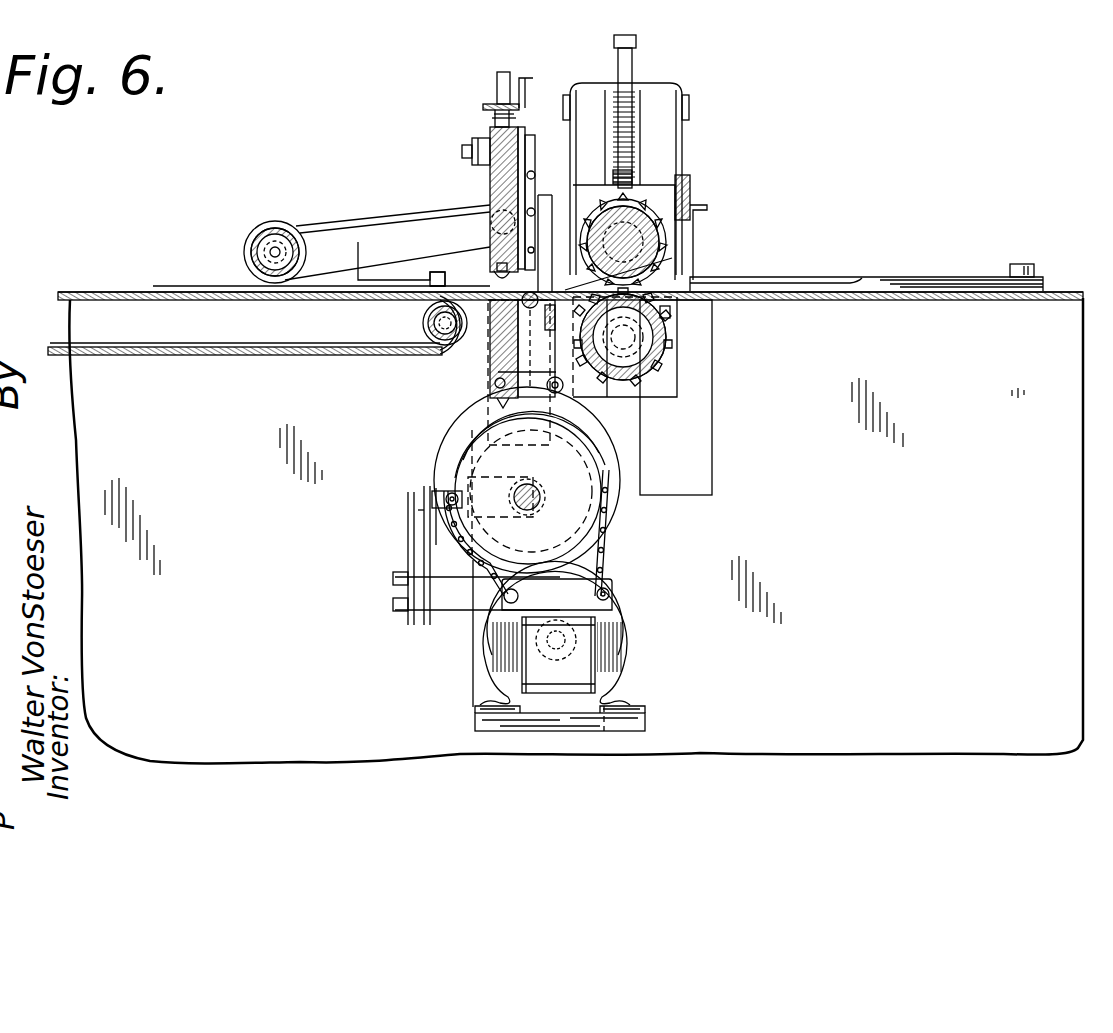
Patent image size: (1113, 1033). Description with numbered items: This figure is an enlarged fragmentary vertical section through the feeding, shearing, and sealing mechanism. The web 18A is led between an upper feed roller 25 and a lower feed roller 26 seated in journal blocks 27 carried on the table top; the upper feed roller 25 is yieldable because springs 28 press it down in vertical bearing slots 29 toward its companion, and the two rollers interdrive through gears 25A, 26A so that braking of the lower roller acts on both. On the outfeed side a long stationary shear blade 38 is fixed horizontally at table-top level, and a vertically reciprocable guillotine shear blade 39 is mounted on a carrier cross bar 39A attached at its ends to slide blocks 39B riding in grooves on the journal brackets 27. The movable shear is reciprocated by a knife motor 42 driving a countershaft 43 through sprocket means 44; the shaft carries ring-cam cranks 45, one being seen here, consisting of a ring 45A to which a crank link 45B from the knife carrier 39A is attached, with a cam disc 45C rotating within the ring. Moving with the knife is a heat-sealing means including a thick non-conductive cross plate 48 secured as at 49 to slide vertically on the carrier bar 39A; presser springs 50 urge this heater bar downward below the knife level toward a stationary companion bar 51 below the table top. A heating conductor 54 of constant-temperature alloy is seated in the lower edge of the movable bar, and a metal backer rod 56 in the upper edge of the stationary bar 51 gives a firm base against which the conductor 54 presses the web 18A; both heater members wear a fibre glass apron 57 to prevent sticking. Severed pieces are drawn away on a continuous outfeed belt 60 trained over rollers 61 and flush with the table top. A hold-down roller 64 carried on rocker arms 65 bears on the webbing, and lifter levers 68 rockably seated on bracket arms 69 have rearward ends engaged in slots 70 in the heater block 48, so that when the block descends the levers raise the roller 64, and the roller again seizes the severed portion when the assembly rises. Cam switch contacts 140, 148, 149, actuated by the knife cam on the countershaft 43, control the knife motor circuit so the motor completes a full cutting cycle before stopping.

The web 18A is at (868, 278).
The upper feed roller 25 is at (650, 245).
The gear 25A is at (692, 208).
The lower feed roller 26 is at (666, 332).
The gear 26A is at (670, 312).
The journal block 27 is at (668, 162).
The spring 28 is at (650, 150).
The vertical bearing slot 29 is at (642, 162).
The stationary shear blade 38 is at (660, 268).
The guillotine shear blade 39 is at (528, 260).
The carrier cross bar 39A is at (527, 140).
The slide block 39B is at (640, 190).
The knife motor 42 is at (622, 630).
The countershaft 43 is at (540, 490).
The sprocket means 44 is at (600, 555).
The ring-cam crank 45 is at (426, 465).
The ring 45A is at (450, 420).
The crank link 45B is at (498, 378).
The cam disc 45C is at (580, 430).
The cross plate 48 is at (490, 185).
The securing means 49 is at (470, 150).
The presser spring 50 is at (490, 115).
The stationary companion bar 51 is at (495, 348).
The heating conductor 54 is at (498, 296).
The backer rod 56 is at (430, 312).
The fibre glass apron 57 is at (492, 210).
The outfeed belt 60 is at (72, 300).
The roller 61 is at (430, 350).
The hold-down roller 64 is at (283, 230).
The rocker arm 65 is at (350, 233).
The lifter lever 68 is at (500, 219).
The bracket arm 69 is at (362, 260).
The slot 70 is at (486, 229).
The cam switch contact 140 is at (410, 555).
The cam switch contact 148 is at (432, 498).
The cam switch contact 149 is at (408, 540).